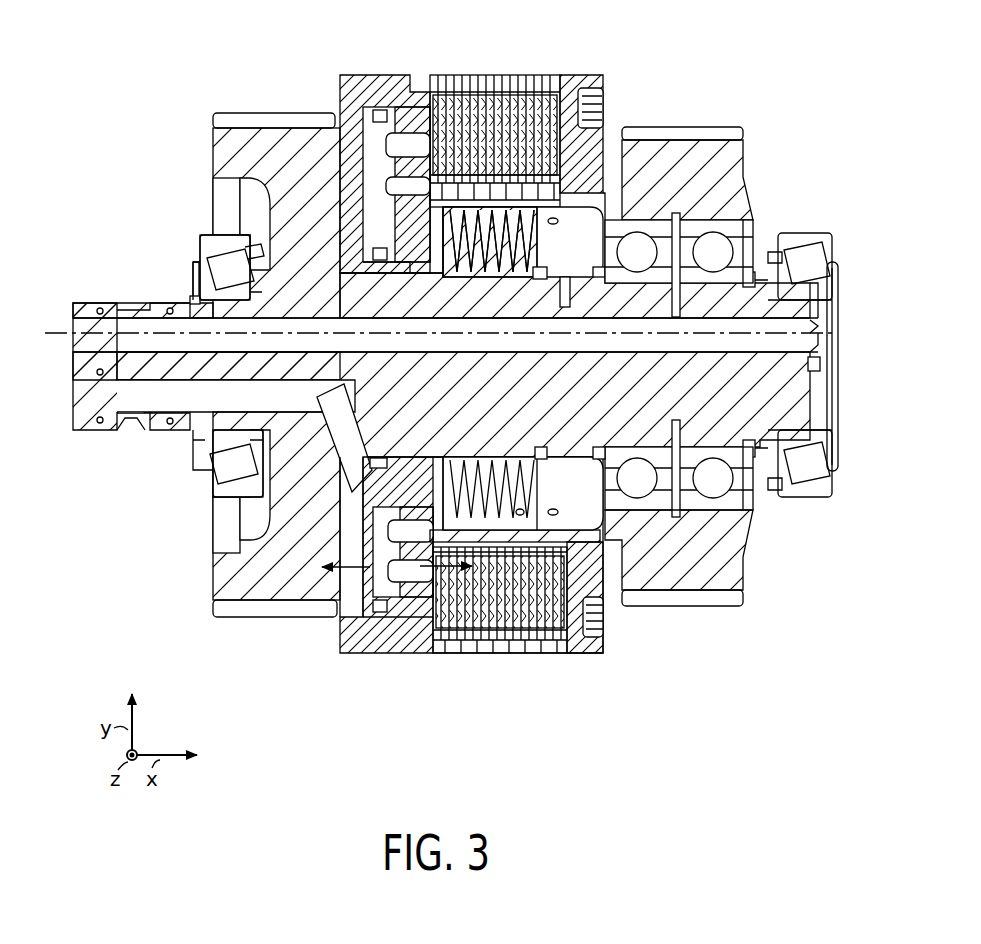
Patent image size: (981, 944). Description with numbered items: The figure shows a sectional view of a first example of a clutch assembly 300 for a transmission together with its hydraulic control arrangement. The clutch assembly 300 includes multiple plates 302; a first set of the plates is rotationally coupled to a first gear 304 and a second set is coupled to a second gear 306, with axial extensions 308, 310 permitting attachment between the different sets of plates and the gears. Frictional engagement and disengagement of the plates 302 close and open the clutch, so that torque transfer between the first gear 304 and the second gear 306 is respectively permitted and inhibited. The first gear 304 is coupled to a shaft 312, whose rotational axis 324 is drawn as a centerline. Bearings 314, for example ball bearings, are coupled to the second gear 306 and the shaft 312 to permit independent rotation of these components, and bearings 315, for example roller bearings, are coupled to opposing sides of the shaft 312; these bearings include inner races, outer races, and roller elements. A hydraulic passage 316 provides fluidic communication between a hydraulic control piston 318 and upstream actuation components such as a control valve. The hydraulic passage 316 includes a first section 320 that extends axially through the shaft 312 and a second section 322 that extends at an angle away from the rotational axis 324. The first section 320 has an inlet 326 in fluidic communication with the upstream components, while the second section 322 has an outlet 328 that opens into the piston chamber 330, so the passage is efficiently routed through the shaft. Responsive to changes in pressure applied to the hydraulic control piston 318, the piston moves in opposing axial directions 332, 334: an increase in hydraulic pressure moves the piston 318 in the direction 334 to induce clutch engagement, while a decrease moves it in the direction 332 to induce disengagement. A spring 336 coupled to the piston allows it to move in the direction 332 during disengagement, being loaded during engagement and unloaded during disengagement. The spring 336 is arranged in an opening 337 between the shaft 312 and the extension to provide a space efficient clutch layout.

The clutch assembly 300 is at (814, 97).
The plates 302 is at (531, 96).
The first gear 304 is at (284, 96).
The second gear 306 is at (698, 96).
The axial extension 308 is at (433, 80).
The axial extension 310 is at (524, 243).
The shaft 312 is at (169, 280).
The bearings 314 is at (779, 218).
The bearings 315 is at (184, 210).
The hydraulic passage 316 is at (164, 368).
The hydraulic control piston 318 is at (403, 610).
The first section 320 is at (182, 403).
The second section 322 is at (345, 430).
The rotational axis 324 is at (52, 332).
The inlet 326 is at (123, 437).
The outlet 328 is at (356, 484).
The piston chamber 330 is at (380, 460).
The direction 332 is at (336, 572).
The direction 334 is at (446, 570).
The spring 336 is at (527, 490).
The opening 337 is at (570, 221).